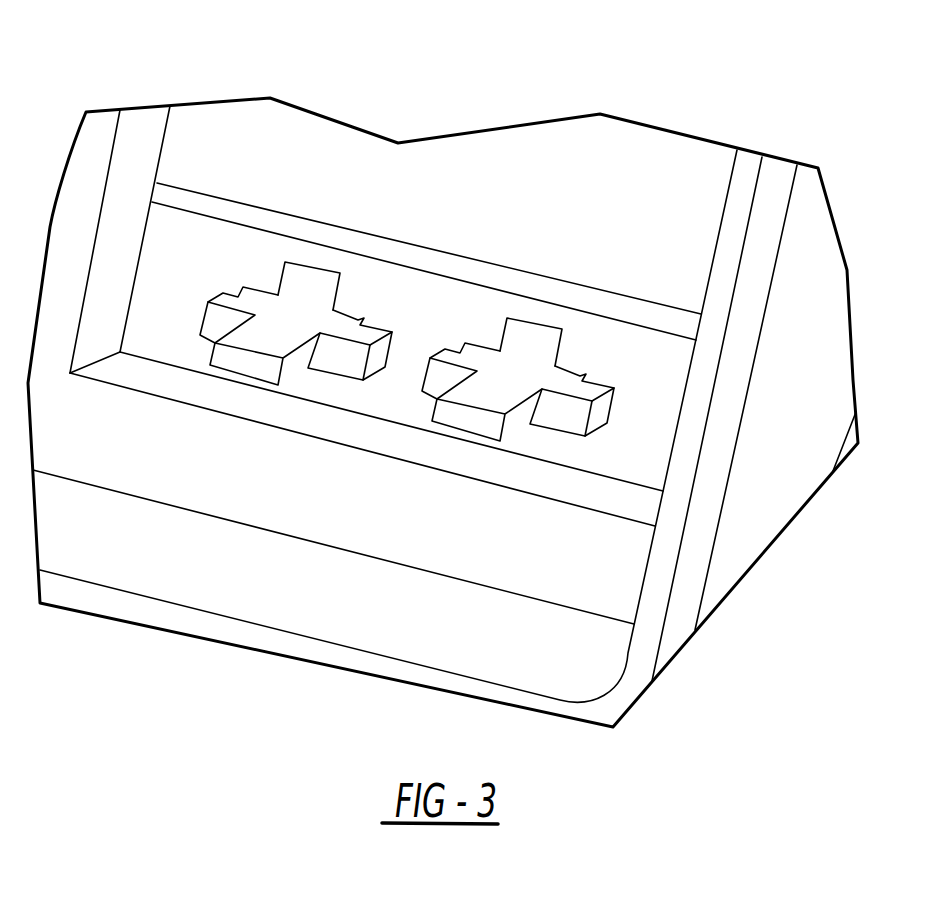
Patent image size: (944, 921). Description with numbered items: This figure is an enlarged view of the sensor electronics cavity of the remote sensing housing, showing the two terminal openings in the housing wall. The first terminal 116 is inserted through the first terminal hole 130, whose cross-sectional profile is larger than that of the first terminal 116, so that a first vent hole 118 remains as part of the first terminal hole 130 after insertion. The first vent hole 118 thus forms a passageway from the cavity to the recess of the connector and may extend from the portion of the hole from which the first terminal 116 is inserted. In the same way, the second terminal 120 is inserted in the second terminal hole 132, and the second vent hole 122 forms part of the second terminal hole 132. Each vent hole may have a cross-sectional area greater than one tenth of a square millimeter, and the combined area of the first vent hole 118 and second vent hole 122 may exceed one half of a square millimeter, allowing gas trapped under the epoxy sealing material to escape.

The first terminal 116 is at (213, 322).
The first vent hole 118 is at (306, 283).
The first terminal hole 130 is at (349, 297).
The second terminal 120 is at (447, 375).
The second vent hole 122 is at (532, 338).
The second terminal hole 132 is at (577, 350).